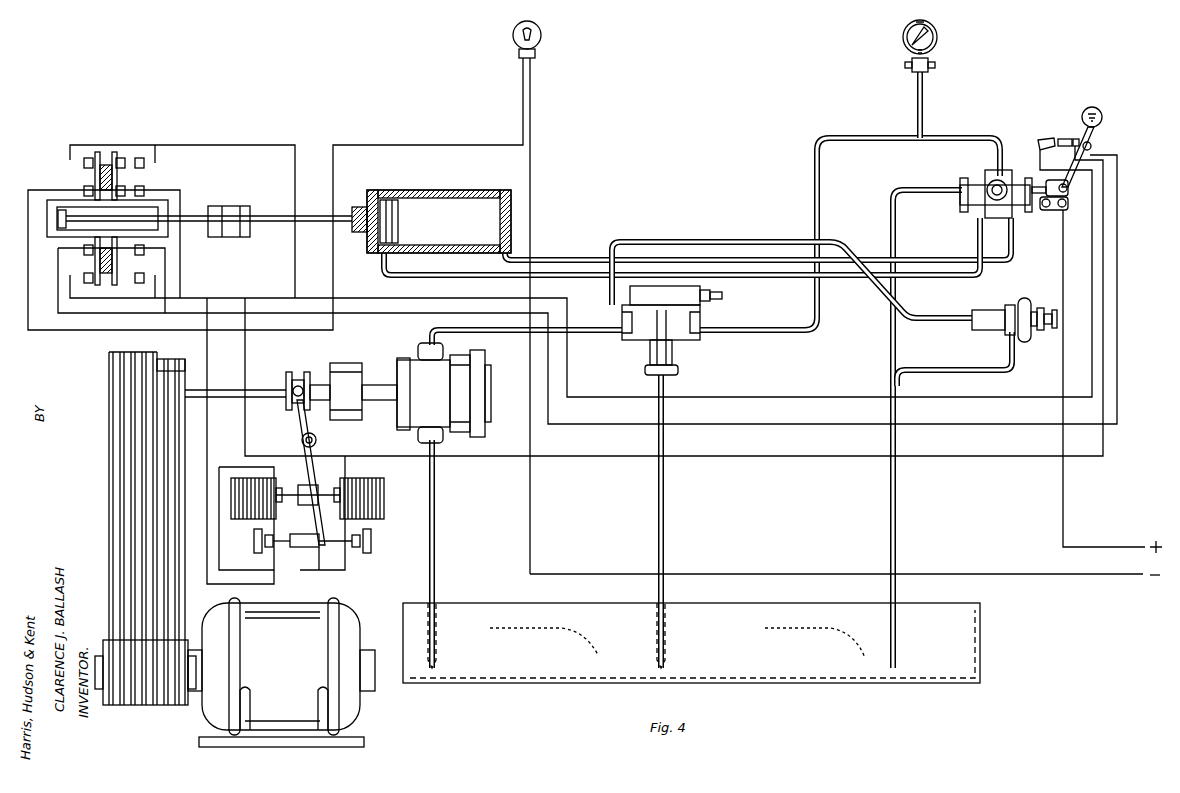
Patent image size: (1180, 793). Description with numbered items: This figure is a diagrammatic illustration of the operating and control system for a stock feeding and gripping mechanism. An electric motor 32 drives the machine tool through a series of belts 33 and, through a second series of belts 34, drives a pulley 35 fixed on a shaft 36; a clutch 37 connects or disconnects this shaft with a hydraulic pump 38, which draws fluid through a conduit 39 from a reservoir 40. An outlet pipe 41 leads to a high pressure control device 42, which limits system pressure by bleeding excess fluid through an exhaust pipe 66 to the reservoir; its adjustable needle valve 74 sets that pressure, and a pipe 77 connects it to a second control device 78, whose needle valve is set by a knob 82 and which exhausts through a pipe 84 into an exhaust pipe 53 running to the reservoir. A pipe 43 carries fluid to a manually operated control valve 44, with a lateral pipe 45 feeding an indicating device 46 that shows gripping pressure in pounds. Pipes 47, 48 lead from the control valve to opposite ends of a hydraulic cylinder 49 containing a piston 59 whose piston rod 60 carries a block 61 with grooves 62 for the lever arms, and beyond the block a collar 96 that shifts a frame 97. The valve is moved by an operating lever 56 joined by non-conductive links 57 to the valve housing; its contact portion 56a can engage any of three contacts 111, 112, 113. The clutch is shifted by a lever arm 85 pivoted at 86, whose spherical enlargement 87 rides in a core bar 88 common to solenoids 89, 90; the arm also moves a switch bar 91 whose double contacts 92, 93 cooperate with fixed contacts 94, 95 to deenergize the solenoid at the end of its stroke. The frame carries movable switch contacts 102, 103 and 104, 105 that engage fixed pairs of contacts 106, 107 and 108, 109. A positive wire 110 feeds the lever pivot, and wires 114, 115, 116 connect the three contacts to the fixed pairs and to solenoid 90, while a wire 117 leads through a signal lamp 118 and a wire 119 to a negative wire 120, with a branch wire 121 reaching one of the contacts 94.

The electric motor 32 is at (281, 672).
The belts 33 is at (120, 424).
The second series of belts 34 is at (170, 508).
The pulley 35 is at (183, 360).
The shaft 36 is at (250, 390).
The clutch 37 is at (350, 363).
The hydraulic pump 38 is at (444, 393).
The conduit 39 is at (437, 532).
The fluid reservoir 40 is at (524, 678).
The outlet pipe 41 is at (503, 332).
The control device 42 is at (646, 338).
The pipe 43 is at (818, 215).
The control valve 44 is at (975, 202).
The lateral pipe 45 is at (921, 112).
The indicating device 46 is at (937, 40).
The pipe 47 is at (448, 277).
The pipe 48 is at (556, 260).
The hydraulic cylinder 49 is at (446, 190).
The exhaust pipe 53 is at (906, 189).
The valve operating lever 56 is at (1102, 117).
The contact portion 56a is at (1092, 138).
The links 57 is at (1052, 210).
The piston 59 is at (388, 199).
The piston rod 60 is at (320, 224).
The block 61 is at (250, 210).
The grooves 62 is at (222, 208).
The exhaust pipe 66 is at (666, 515).
The needle valve 74 is at (723, 296).
The pipe 77 is at (702, 240).
The control device 78 is at (1004, 305).
The knob 82 is at (1046, 313).
The pipe 84 is at (1015, 362).
The lever arm 85 is at (296, 408).
The pivot 86 is at (316, 440).
The spherical enlargement 87 is at (306, 478).
The core bar 88 is at (306, 505).
The solenoid 89 is at (240, 478).
The solenoid 90 is at (360, 478).
The switch bar 91 is at (318, 570).
The double contacts 92 is at (254, 540).
The double contacts 93 is at (371, 540).
The fixed contacts 94 is at (302, 547).
The fixed contacts 95 is at (332, 547).
The collar 96 is at (57, 224).
The shiftable frame 97 is at (47, 211).
The switch contacts 102 is at (97, 152).
The switch contacts 103 is at (115, 152).
The switch contacts 104 is at (97, 285).
The switch contacts 105 is at (115, 285).
The fixed contacts 106 is at (84, 190).
The fixed contacts 107 is at (144, 190).
The fixed contacts 108 is at (84, 278).
The fixed contacts 109 is at (144, 278).
The wire 110 is at (1064, 514).
The contact 111 is at (1044, 138).
The contact 112 is at (1065, 139).
The contact 113 is at (1092, 148).
The wire 114 is at (230, 145).
The wire 115 is at (228, 298).
The wire 116 is at (262, 312).
The wire 117 is at (36, 331).
The signal lamp 118 is at (538, 52).
The wire 119 is at (532, 180).
The wire 120 is at (766, 574).
The branch wire 121 is at (208, 424).